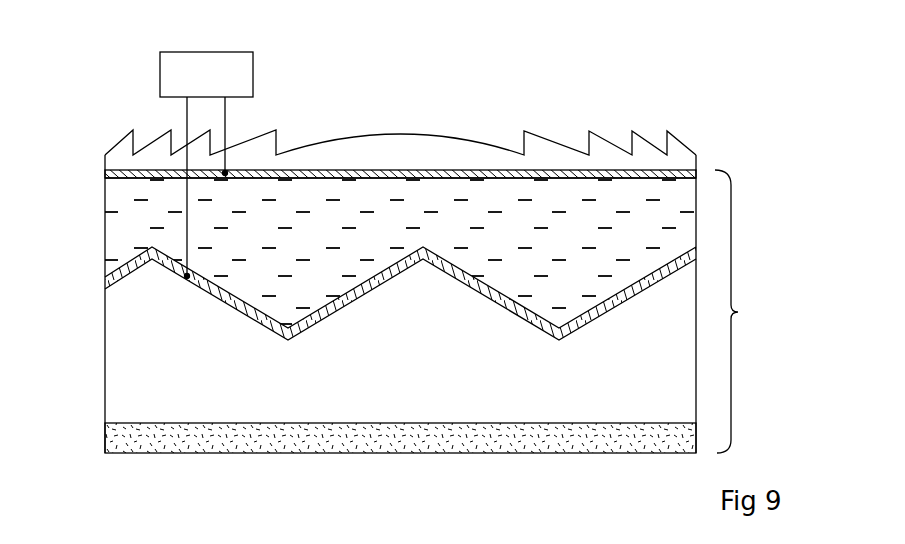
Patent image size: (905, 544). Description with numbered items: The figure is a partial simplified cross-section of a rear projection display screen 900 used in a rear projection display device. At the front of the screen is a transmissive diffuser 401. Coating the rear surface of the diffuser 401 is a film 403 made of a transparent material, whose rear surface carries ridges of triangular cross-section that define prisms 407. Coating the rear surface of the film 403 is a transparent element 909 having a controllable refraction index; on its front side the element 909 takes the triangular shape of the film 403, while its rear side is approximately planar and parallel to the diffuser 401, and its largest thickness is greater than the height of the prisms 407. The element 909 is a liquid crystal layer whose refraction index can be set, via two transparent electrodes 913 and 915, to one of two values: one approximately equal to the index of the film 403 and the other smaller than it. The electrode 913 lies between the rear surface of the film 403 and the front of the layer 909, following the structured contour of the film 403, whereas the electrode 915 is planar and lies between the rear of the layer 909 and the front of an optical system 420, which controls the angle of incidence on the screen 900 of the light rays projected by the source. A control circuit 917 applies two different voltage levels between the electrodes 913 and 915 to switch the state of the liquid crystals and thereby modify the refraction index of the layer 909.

The control circuit 917 is at (253, 62).
The optical system 420 is at (372, 133).
The transparent electrode 915 is at (108, 175).
The transparent element 909 is at (120, 203).
The transparent electrode 913 is at (123, 263).
The prisms 407 is at (138, 327).
The film 403 is at (147, 388).
The transmissive diffuser 401 is at (126, 437).
The rear projection display screen 900 is at (745, 311).